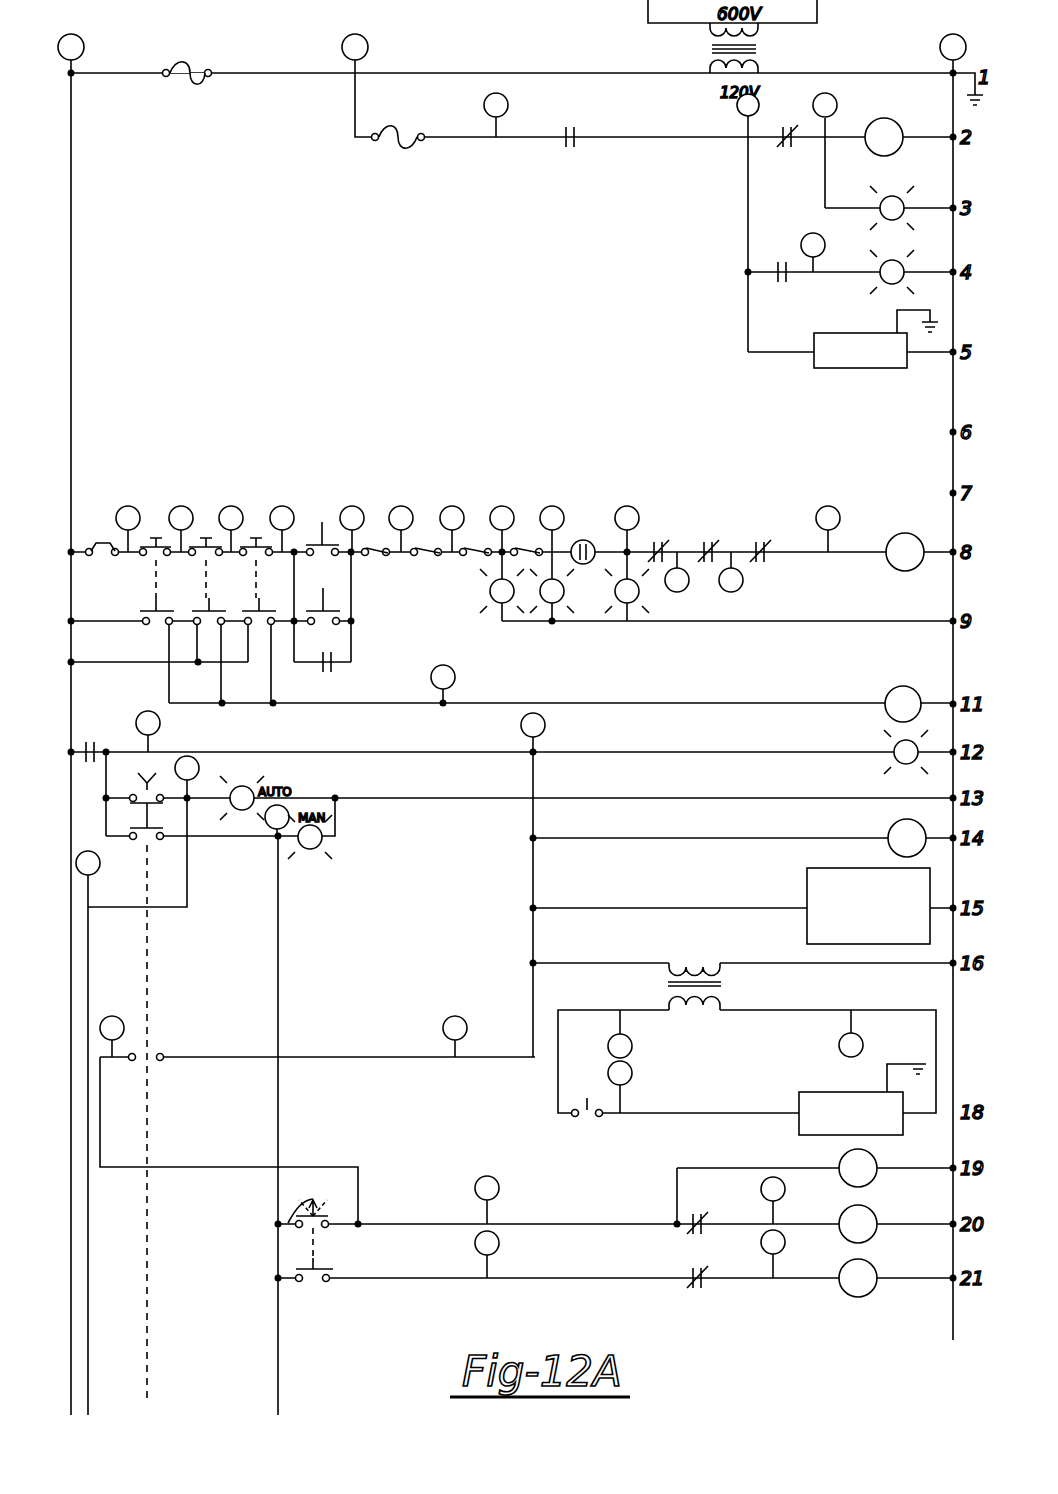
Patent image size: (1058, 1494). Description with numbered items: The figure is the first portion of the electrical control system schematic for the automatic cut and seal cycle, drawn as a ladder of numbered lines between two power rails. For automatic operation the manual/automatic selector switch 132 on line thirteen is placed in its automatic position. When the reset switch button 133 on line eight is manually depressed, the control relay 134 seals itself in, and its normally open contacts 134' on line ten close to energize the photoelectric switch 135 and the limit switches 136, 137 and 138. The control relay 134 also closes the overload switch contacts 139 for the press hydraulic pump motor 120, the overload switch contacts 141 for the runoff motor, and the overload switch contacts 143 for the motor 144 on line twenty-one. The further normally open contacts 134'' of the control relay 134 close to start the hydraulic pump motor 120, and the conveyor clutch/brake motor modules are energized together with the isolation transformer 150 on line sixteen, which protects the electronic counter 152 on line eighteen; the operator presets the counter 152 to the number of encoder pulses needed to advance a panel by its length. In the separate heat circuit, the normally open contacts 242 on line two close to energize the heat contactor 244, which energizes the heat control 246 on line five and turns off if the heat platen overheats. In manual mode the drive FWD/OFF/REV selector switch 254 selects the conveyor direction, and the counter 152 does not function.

The normally open contacts 242 is at (576, 130).
The heat contactor 244 is at (884, 118).
The heat control 246 is at (842, 333).
The reset switch button 133 is at (322, 522).
The photoelectric switch 135 is at (590, 540).
The overload switch contacts 139 is at (652, 545).
The overload switch contacts 141 is at (703, 545).
The overload switch contacts 143 is at (752, 545).
The control relay 134 is at (881, 569).
The limit switch 136 is at (366, 556).
The limit switch 137 is at (418, 556).
The limit switch 138 is at (466, 556).
The normally open contacts 134' is at (371, 674).
The normally open contacts 134'' is at (117, 720).
The manual/automatic selector switch 132 is at (150, 780).
The hydraulic pump motor 120 is at (890, 828).
The isolation transformer 150 is at (722, 998).
The electronic counter 152 is at (799, 1098).
The drive FWD/OFF/REV selector switch 254 is at (278, 1226).
The motor 144 is at (843, 1292).